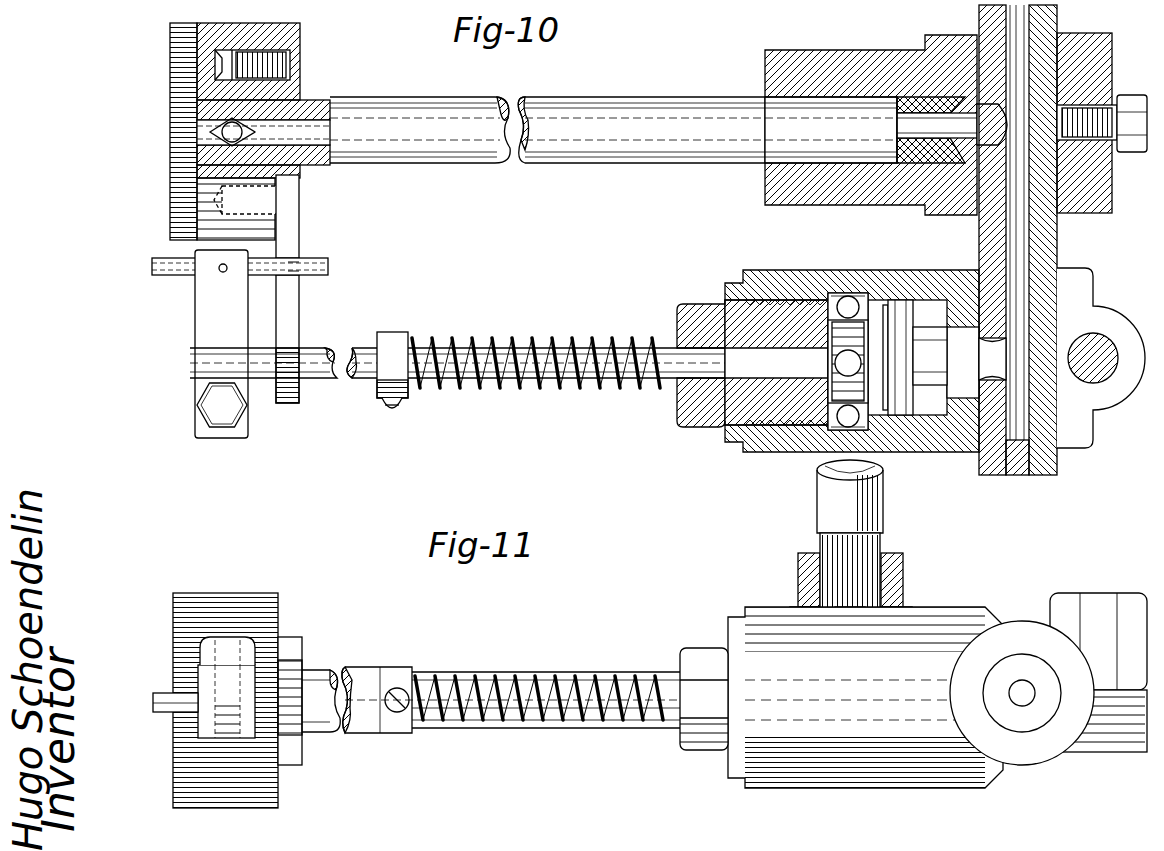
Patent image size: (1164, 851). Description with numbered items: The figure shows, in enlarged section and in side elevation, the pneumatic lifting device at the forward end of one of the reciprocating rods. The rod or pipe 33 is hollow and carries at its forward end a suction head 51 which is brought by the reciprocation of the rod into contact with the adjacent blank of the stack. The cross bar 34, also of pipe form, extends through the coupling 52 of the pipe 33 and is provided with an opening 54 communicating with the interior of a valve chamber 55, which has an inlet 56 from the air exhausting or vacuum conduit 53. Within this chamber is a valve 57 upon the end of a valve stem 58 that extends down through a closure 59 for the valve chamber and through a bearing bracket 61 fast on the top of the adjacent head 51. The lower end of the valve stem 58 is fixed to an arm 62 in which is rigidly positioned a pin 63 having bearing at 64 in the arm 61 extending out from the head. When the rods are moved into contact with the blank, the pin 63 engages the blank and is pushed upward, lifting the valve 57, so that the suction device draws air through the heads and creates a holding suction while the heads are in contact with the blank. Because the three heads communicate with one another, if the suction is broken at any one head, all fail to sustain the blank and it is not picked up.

In FIG. 10, the rod 33 is at (715, 140).
In FIG. 11, the rod 33 is at (556, 672).
In FIG. 10, the cross bar 34 is at (1050, 456).
In FIG. 11, the cross bar 34 is at (1030, 725).
In FIG. 10, the suction head 51 is at (200, 212).
In FIG. 11, the suction head 51 is at (225, 600).
In FIG. 10, the coupling 52 is at (1095, 192).
In FIG. 11, the vacuum conduit 53 is at (828, 500).
In FIG. 10, the opening 54 is at (994, 382).
In FIG. 10, the valve chamber 55 is at (962, 446).
In FIG. 11, the valve chamber 55 is at (940, 612).
In FIG. 11, the inlet 56 is at (820, 618).
In FIG. 10, the valve 57 is at (902, 402).
In FIG. 10, the valve stem 58 is at (702, 370).
In FIG. 11, the valve stem 58 is at (620, 690).
In FIG. 10, the closure 59 is at (700, 311).
In FIG. 11, the closure 59 is at (712, 650).
In FIG. 10, the bearing bracket 61 is at (287, 396).
In FIG. 11, the bearing bracket 61 is at (295, 740).
In FIG. 10, the arm 62 is at (205, 378).
In FIG. 11, the arm 62 is at (203, 672).
In FIG. 10, the pin 63 is at (178, 270).
In FIG. 11, the pin 63 is at (165, 697).
In FIG. 10, the bearing 64 is at (298, 272).